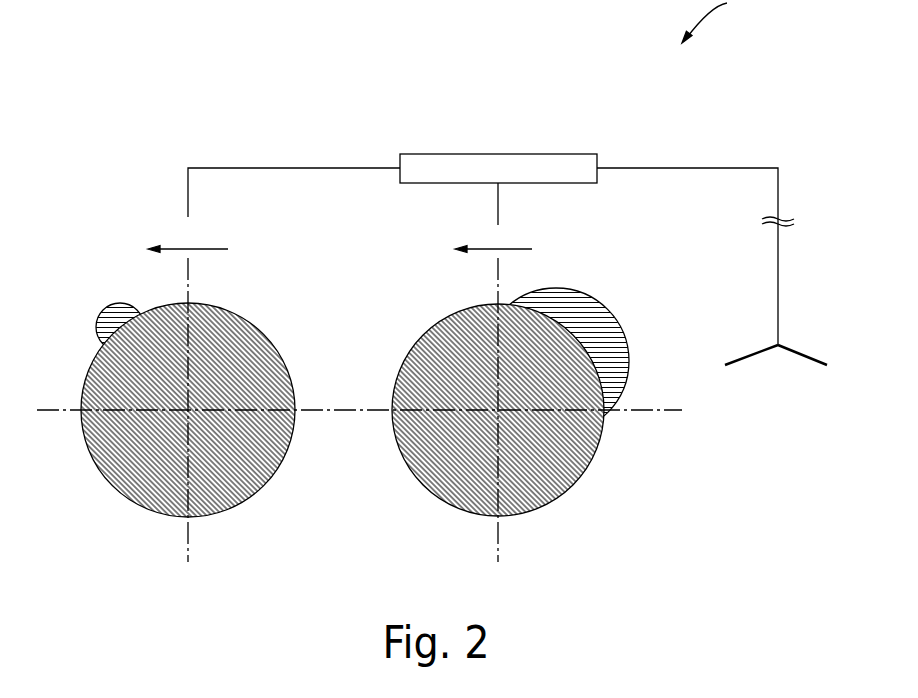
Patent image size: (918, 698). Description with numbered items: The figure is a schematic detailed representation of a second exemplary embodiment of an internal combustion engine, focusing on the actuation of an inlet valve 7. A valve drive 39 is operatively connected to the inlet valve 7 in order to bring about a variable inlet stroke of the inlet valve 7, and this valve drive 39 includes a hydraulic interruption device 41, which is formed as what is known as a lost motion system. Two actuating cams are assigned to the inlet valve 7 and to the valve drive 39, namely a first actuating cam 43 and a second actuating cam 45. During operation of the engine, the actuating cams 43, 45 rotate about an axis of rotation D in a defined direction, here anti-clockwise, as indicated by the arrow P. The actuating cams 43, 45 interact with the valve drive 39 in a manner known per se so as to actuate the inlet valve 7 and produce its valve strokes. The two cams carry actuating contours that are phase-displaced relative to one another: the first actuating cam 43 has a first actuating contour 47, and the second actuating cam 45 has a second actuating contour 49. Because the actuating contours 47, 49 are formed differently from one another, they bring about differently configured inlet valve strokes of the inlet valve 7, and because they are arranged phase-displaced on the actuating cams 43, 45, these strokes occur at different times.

The valve drive 39 is at (125, 118).
The hydraulic interruption device 41 is at (497, 154).
The first actuating cam 43 is at (268, 332).
The second actuating cam 45 is at (593, 497).
The first actuating contour 47 is at (118, 304).
The second actuating contour 49 is at (600, 297).
The inlet valve 7 is at (779, 282).
The arrow P is at (210, 249).
The axis of rotation D is at (188, 410).